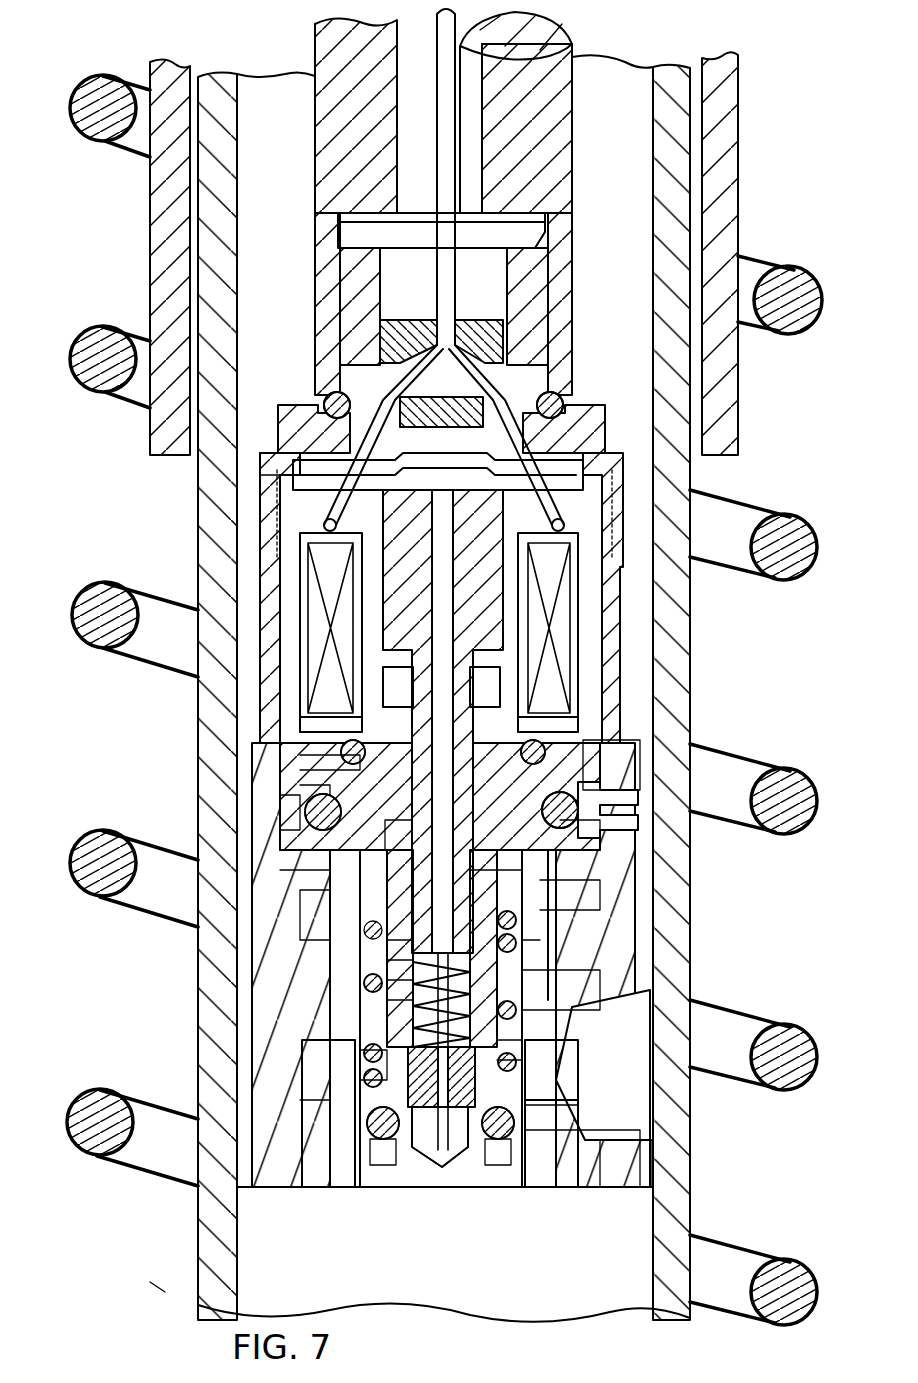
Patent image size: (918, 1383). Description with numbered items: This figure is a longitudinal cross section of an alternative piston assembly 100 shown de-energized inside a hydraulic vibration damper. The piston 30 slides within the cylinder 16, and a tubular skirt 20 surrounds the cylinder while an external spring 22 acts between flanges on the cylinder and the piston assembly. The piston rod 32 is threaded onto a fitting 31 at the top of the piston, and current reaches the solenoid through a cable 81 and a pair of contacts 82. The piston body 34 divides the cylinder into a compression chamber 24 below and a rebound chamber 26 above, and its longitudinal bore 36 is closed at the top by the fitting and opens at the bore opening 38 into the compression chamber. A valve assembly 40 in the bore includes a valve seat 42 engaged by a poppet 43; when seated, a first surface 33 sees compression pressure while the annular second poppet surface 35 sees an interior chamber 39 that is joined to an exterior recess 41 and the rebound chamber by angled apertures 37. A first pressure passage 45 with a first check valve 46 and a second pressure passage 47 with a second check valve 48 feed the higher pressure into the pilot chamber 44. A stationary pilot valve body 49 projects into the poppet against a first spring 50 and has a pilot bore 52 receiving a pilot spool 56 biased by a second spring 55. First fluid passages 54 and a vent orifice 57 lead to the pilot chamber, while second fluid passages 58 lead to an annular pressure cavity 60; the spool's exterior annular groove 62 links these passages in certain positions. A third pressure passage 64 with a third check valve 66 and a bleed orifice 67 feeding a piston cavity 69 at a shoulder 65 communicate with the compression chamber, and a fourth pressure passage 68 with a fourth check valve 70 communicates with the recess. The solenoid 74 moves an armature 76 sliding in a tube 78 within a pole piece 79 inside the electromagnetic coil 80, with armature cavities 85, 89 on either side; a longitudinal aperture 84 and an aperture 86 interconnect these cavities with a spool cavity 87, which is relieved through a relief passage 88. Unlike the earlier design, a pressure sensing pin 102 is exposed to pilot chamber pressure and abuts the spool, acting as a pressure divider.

The alternative piston assembly 100 is at (158, 1282).
The cylinder 16 is at (205, 1232).
The tubular skirt 20 is at (155, 264).
The external spring 22 is at (105, 350).
The compression chamber 24 is at (456, 1293).
The rebound chamber 26 is at (586, 286).
The piston 30 is at (291, 408).
The fitting 31 is at (325, 312).
The piston rod 32 is at (325, 188).
The first surface 33 is at (447, 1175).
The piston body 34 is at (640, 1160).
The second poppet surface 35 is at (562, 1162).
The longitudinal bore 36 is at (560, 1120).
The apertures 37 is at (589, 1056).
The bore opening 38 is at (620, 1152).
The interior chamber 39 is at (548, 1141).
The valve assembly 40 is at (510, 1050).
The exterior recess 41 is at (560, 895).
The valve seat 42 is at (340, 1120).
The poppet 43 is at (426, 1180).
The pilot chamber 44 is at (530, 1000).
The first pressure passage 45 is at (372, 1162).
The first check valve 46 is at (386, 1150).
The second pressure passage 47 is at (500, 1162).
The second check valve 48 is at (486, 1141).
The pilot valve body 49 is at (560, 990).
The first spring 50 is at (400, 990).
The pilot bore 52 is at (375, 922).
The first fluid passages 54 is at (400, 950).
The second spring 55 is at (380, 1060).
The pilot spool 56 is at (330, 760).
The vent orifice 57 is at (540, 920).
The second fluid passages 58 is at (330, 790).
The pressure cavity 60 is at (300, 800).
The exterior annular groove 62 is at (500, 856).
The third pressure passage 64 is at (395, 830).
The shoulder 65 is at (360, 870).
The third check valve 66 is at (318, 822).
The bleed orifice 67 is at (300, 852).
The fourth pressure passage 68 is at (600, 748).
The piston cavity 69 is at (310, 900).
The fourth check valve 70 is at (575, 830).
The solenoid 74 is at (300, 598).
The armature 76 is at (400, 590).
The tube 78 is at (332, 742).
The pole piece 79 is at (282, 470).
The electromagnetic coil 80 is at (326, 696).
The cable 81 is at (436, 158).
The contacts 82 is at (500, 447).
The longitudinal aperture 84 is at (525, 570).
The armature cavity 85 is at (527, 707).
The aperture 86 is at (485, 690).
The spool cavity 87 is at (440, 1000).
The relief passage 88 is at (576, 790).
The armature cavity 89 is at (405, 487).
The pressure sensing pin 102 is at (455, 1160).